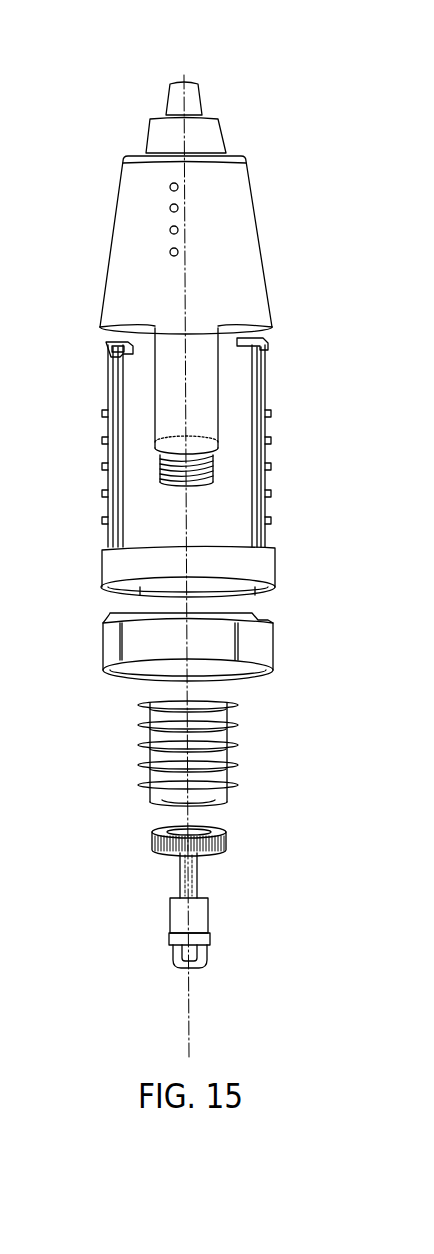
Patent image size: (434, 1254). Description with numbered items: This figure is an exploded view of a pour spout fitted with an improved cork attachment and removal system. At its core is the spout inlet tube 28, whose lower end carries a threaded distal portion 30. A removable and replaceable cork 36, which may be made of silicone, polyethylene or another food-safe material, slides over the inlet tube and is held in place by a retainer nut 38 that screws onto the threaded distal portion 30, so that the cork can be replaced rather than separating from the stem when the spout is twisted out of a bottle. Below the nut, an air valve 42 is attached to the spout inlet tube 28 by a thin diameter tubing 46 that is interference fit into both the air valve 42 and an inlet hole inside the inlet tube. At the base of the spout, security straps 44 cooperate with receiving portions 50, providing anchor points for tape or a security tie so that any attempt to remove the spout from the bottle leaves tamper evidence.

The spout inlet tube 28 is at (203, 408).
The threaded distal portion 30 is at (215, 467).
The removable and replaceable cork 36 is at (238, 762).
The retainer nut 38 is at (227, 843).
The air valve 42 is at (210, 928).
The security straps 44 is at (262, 376).
The thin diameter tubing 46 is at (197, 886).
The receiving portions 50 is at (133, 356).